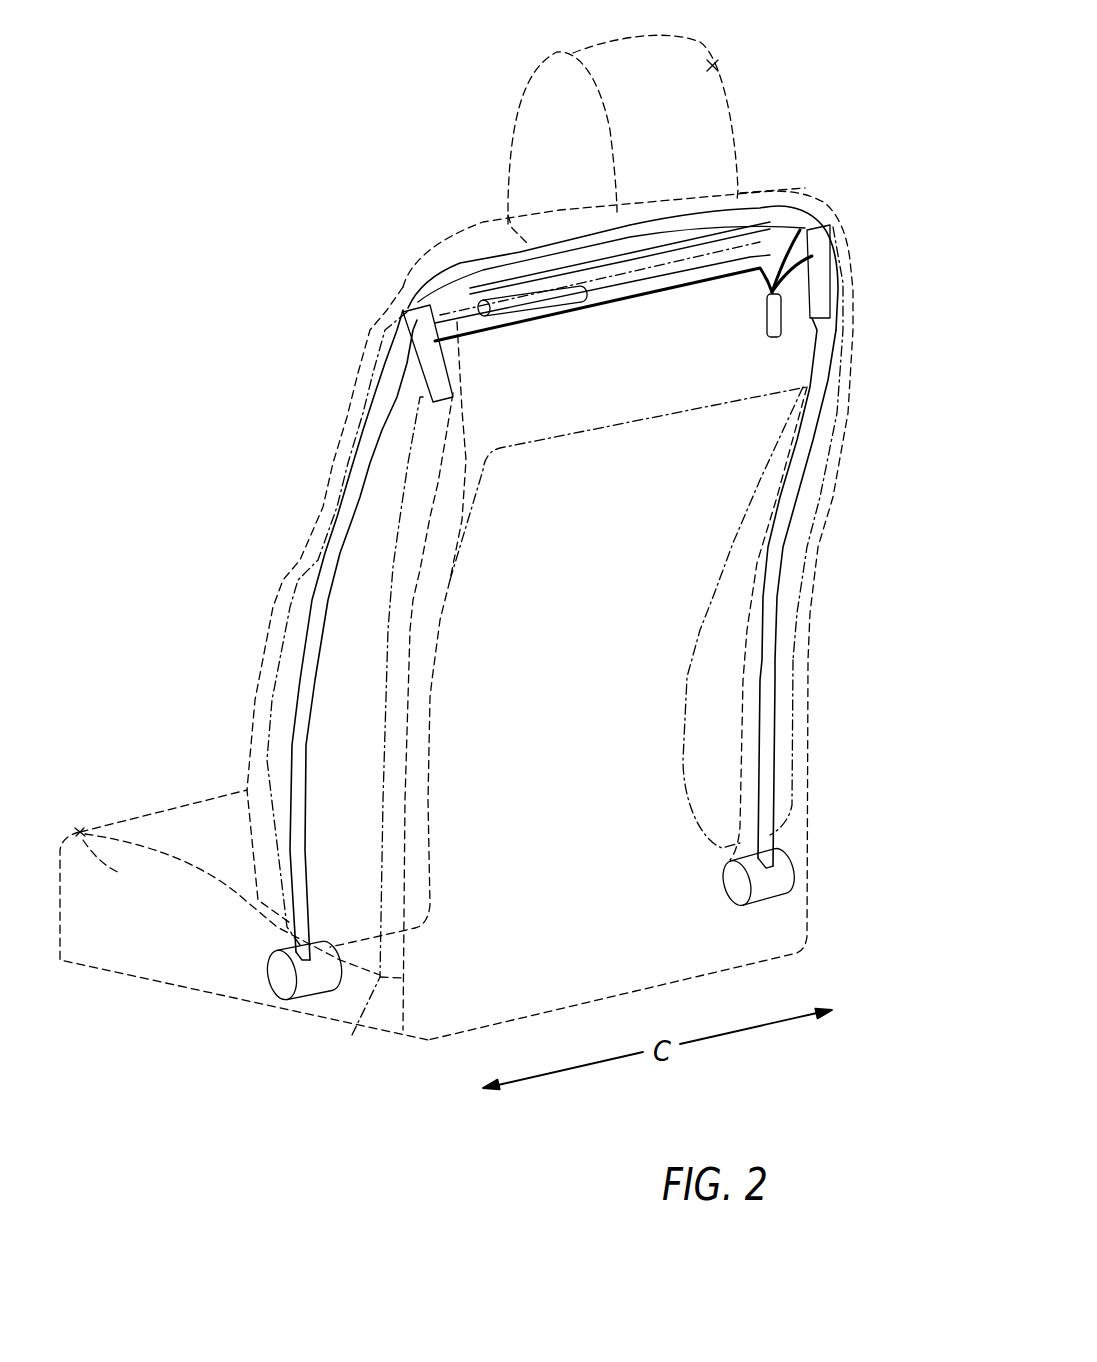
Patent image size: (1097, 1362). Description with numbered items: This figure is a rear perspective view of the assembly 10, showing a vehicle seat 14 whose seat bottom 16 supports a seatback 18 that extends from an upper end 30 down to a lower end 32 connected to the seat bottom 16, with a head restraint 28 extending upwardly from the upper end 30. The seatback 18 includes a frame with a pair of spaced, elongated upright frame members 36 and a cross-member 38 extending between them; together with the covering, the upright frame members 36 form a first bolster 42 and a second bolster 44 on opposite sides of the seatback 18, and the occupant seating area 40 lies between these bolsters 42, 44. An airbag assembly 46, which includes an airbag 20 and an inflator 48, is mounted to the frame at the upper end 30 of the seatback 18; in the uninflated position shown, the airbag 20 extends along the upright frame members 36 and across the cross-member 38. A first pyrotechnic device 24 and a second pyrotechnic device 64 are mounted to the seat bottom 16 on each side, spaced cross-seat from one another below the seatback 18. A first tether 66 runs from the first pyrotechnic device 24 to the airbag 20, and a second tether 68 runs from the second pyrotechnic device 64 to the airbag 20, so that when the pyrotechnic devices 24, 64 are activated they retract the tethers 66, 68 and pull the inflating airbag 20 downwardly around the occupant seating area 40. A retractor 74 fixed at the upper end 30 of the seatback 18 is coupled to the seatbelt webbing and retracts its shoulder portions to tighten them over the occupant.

The assembly 10 is at (330, 109).
The vehicle seat 14 is at (852, 442).
The seat bottom 16 is at (80, 830).
The seatback 18 is at (825, 540).
The airbag 20 is at (753, 207).
The first pyrotechnic device 24 is at (268, 977).
The head restraint 28 is at (713, 65).
The upper end 30 is at (403, 287).
The lower end 32 is at (380, 985).
The upright frame members 36 is at (433, 637).
The cross-member 38 is at (633, 405).
The occupant seating area 40 is at (190, 350).
The first bolster 42 is at (273, 607).
The second bolster 44 is at (800, 711).
The airbag assembly 46 is at (808, 207).
The inflator 48 is at (763, 313).
The second pyrotechnic device 64 is at (782, 878).
The first tether 66 is at (350, 498).
The second tether 68 is at (775, 628).
The retractor 74 is at (590, 295).